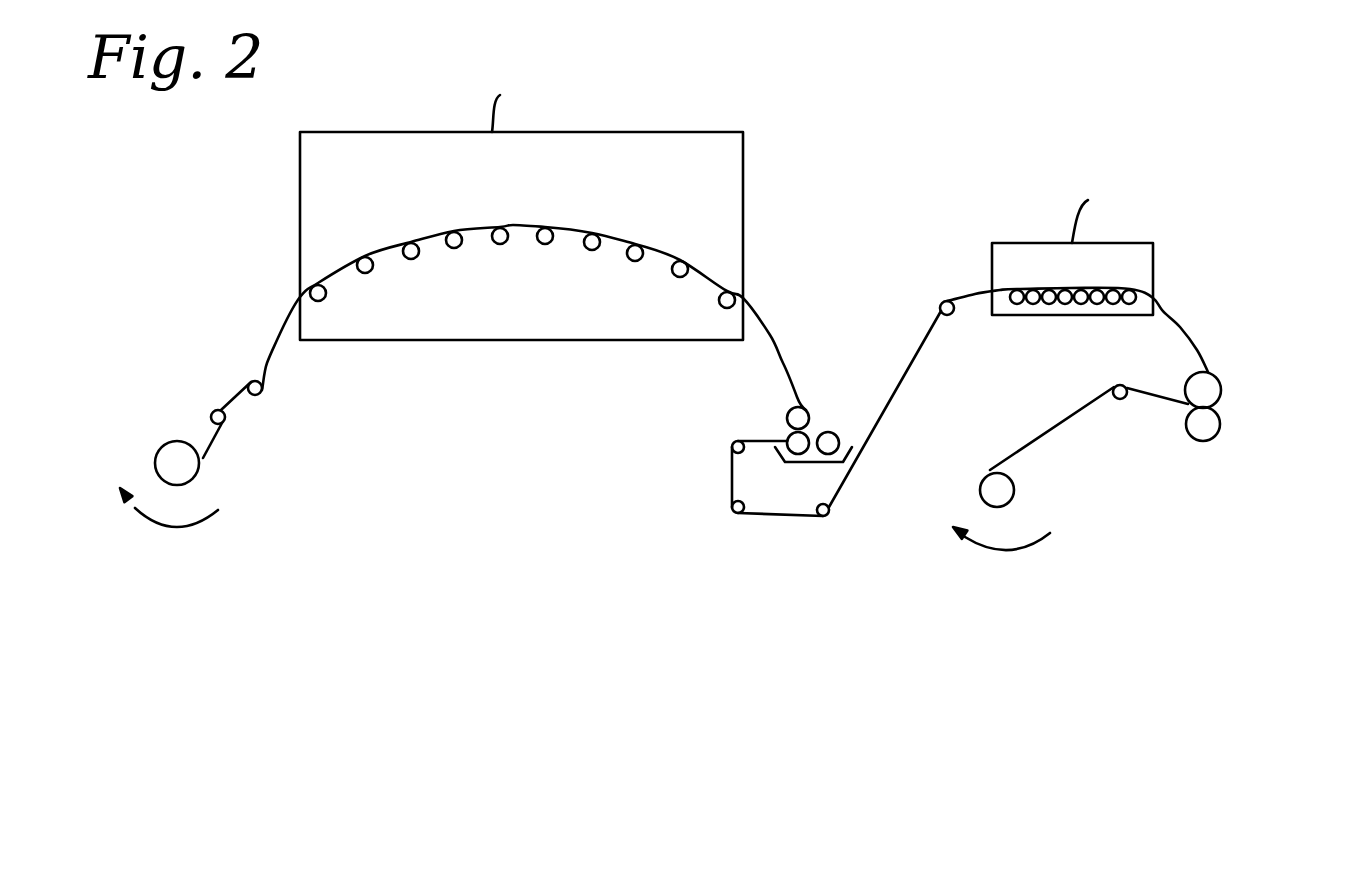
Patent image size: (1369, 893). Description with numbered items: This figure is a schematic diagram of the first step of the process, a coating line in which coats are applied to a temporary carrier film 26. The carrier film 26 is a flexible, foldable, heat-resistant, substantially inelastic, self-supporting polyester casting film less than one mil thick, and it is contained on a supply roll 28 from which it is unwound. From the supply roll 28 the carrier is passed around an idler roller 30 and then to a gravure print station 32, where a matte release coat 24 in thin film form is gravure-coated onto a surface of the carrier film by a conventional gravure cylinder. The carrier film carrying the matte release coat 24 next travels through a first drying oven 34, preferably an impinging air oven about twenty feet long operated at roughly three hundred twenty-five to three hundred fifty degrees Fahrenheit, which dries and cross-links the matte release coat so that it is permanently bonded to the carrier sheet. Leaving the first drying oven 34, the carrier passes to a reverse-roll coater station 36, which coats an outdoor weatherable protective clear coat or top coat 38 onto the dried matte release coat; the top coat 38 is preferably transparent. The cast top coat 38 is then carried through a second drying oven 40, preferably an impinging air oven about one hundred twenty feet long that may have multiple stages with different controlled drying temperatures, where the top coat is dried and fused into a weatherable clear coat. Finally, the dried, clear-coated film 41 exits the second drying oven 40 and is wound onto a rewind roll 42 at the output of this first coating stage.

The matte release coat 24 is at (1183, 327).
The temporary carrier film 26 is at (1048, 431).
The supply roll 28 is at (1005, 492).
The idler roller 30 is at (1121, 400).
The gravure print station 32 is at (1242, 402).
The first drying oven 34 is at (1157, 258).
The reverse-roll coater station 36 is at (834, 397).
The top coat 38 is at (770, 335).
The second drying oven 40 is at (745, 165).
The dried, clear-coated film 41 is at (268, 352).
The rewind roll 42 is at (166, 441).